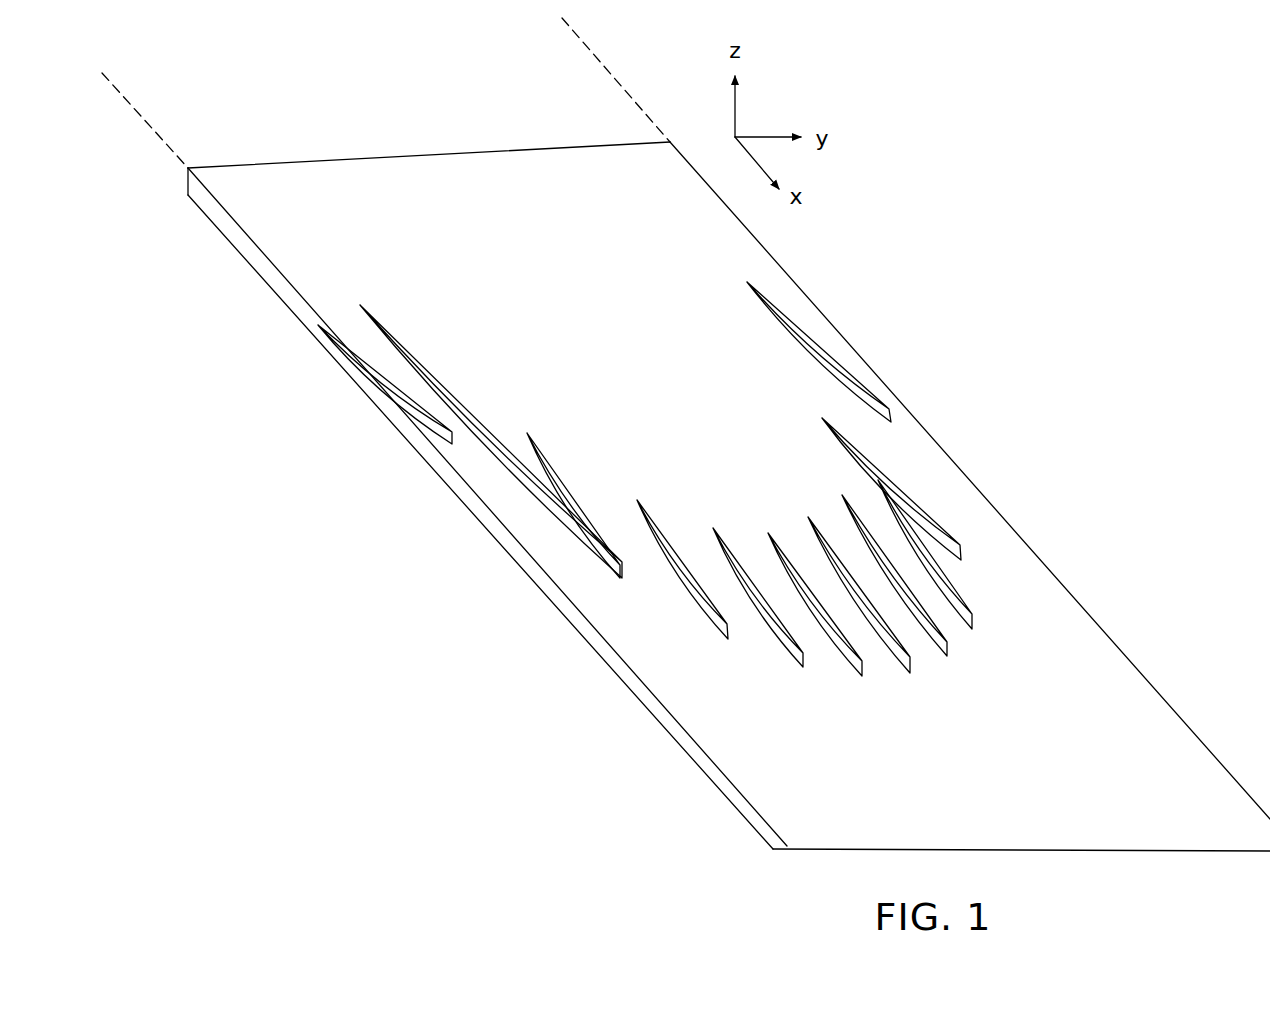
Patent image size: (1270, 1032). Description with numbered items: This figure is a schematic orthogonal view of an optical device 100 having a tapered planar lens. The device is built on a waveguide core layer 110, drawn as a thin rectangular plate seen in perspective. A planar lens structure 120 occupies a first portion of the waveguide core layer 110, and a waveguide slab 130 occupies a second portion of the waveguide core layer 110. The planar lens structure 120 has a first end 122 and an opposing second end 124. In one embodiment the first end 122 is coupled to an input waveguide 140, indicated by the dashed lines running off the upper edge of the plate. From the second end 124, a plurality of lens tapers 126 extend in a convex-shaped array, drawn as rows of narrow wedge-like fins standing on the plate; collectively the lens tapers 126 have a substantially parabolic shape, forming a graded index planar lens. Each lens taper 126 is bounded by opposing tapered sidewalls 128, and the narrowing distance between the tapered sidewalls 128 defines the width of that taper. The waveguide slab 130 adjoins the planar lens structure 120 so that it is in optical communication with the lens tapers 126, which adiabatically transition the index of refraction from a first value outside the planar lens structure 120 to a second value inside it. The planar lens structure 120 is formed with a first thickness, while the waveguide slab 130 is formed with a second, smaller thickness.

The optical device 100 is at (1021, 250).
The waveguide core layer 110 is at (729, 471).
The planar lens structure 120 is at (677, 357).
The first end 122 is at (485, 157).
The second end 124 is at (800, 502).
The lens tapers 126 is at (690, 587).
The tapered sidewalls 128 is at (602, 550).
The waveguide slab 130 is at (1075, 727).
The input waveguide 140 is at (583, 43).